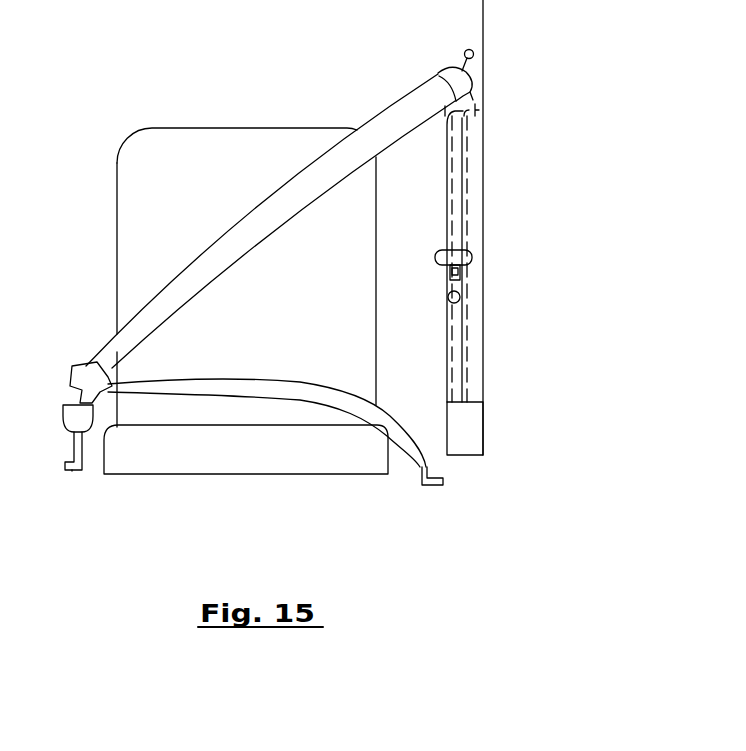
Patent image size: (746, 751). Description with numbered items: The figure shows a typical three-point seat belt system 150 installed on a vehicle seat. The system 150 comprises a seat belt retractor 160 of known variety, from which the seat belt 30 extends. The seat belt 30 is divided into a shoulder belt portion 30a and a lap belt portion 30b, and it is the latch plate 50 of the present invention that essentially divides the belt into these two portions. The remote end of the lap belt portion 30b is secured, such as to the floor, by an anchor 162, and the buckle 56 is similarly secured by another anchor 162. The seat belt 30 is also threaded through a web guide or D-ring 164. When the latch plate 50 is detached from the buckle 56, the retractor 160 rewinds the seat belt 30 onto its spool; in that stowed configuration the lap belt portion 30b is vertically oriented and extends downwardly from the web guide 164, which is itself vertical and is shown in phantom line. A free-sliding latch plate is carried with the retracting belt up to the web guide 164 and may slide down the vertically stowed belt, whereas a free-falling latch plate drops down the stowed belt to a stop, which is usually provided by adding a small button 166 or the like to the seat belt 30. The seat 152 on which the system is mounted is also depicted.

The seat belt 30 is at (184, 282).
The shoulder belt portion 30a is at (246, 234).
The lap belt portion 30b is at (222, 384).
The latch plate 50 is at (60, 395).
The buckle 56 is at (78, 413).
The three-point seat belt system 150 is at (105, 229).
The seat back 152 is at (160, 147).
The seat belt retractor 160 is at (473, 438).
The anchor 162 is at (72, 470).
The web guide or D-ring 164 is at (444, 72).
The button 166 is at (460, 298).